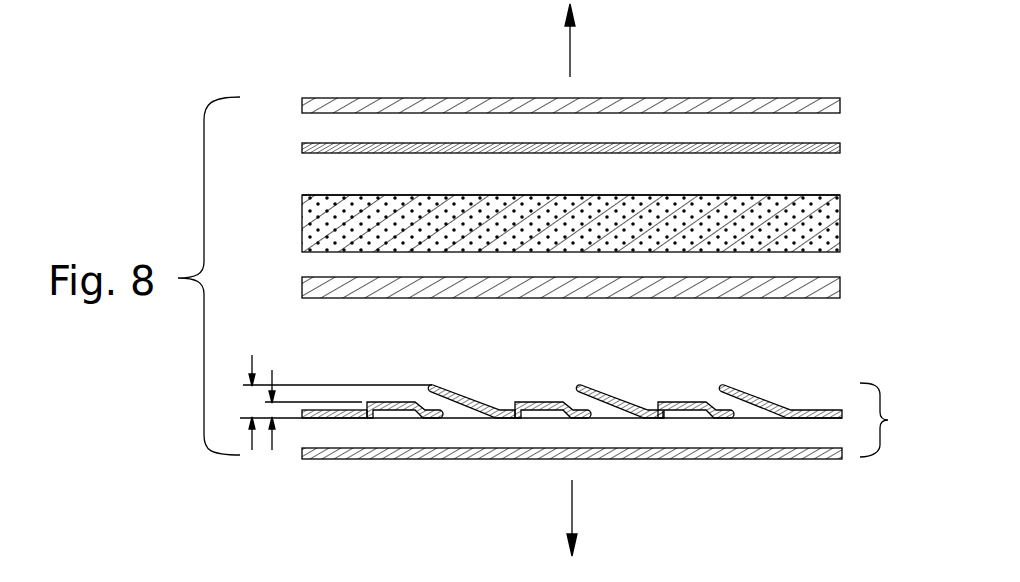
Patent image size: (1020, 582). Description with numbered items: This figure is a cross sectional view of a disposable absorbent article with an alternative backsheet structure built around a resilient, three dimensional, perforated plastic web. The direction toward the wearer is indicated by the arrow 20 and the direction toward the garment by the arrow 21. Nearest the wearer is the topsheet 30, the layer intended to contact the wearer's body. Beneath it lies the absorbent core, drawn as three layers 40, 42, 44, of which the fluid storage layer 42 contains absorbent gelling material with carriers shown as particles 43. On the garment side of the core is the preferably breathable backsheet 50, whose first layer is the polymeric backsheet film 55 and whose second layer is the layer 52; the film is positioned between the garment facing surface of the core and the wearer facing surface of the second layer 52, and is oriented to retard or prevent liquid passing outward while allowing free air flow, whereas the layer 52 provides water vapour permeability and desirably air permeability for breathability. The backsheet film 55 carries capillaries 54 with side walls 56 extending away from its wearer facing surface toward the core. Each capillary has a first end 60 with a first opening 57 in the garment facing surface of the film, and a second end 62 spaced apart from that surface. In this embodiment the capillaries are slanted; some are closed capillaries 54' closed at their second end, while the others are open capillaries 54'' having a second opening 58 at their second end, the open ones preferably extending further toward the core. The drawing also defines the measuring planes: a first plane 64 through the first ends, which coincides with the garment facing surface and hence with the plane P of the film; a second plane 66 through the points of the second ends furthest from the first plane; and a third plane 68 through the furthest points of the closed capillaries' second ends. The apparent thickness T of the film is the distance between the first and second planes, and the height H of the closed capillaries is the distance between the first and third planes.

The arrow 20 is at (572, 50).
The arrow 21 is at (572, 506).
The topsheet 30 is at (779, 99).
The absorbent core layer 40 is at (822, 142).
The fluid storage layer 42 is at (832, 229).
The particles 43 is at (839, 197).
The absorbent core layer 44 is at (834, 288).
The backsheet 50 is at (892, 420).
The second layer 52 is at (838, 456).
The backsheet film 55 is at (566, 424).
The capillaries 54 is at (579, 422).
The closed capillaries 54' is at (585, 471).
The open capillaries 54'' is at (664, 369).
The side walls 56 is at (437, 405).
The first opening 57 is at (486, 420).
The second opening 58 is at (434, 386).
The first end 60 is at (640, 420).
The second end 62 is at (604, 398).
The first plane 64 is at (305, 420).
The second plane 66 is at (356, 402).
The third plane 68 is at (307, 408).
The plane of the backsheet film P is at (740, 420).
The apparent thickness T is at (337, 386).
The height H is at (313, 424).